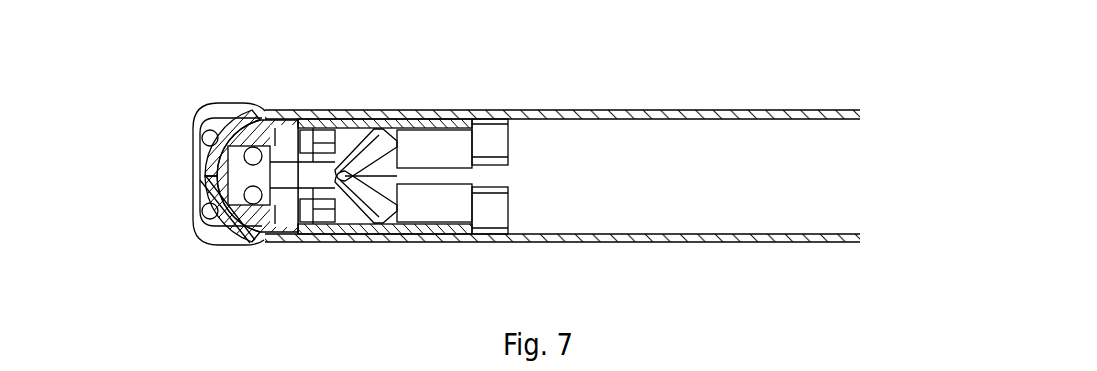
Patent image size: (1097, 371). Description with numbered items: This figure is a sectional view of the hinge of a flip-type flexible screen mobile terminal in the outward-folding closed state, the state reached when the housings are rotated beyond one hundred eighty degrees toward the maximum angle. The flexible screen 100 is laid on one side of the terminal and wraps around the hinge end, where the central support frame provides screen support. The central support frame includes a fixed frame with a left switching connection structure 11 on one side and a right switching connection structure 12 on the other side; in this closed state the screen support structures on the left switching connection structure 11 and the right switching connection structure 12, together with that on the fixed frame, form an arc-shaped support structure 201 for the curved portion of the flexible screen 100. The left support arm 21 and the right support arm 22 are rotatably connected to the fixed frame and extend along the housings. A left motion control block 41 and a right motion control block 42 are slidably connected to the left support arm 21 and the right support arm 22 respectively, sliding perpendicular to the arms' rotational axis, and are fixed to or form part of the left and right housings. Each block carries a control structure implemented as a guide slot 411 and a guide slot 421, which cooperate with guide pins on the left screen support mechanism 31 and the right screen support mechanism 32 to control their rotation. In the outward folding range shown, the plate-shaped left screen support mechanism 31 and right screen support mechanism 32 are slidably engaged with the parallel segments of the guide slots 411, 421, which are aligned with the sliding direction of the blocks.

The flexible screen 100 is at (225, 231).
The arc-shaped support structure 201 is at (208, 186).
The left switching connection structure 11 is at (277, 120).
The right switching connection structure 12 is at (280, 240).
The left support arm 21 is at (490, 128).
The right support arm 22 is at (480, 240).
The left screen support mechanism 31 is at (372, 122).
The right screen support mechanism 32 is at (358, 240).
The left motion control block 41 is at (438, 125).
The right motion control block 42 is at (415, 240).
The guide slot 411 is at (347, 128).
The guide slot 421 is at (330, 240).